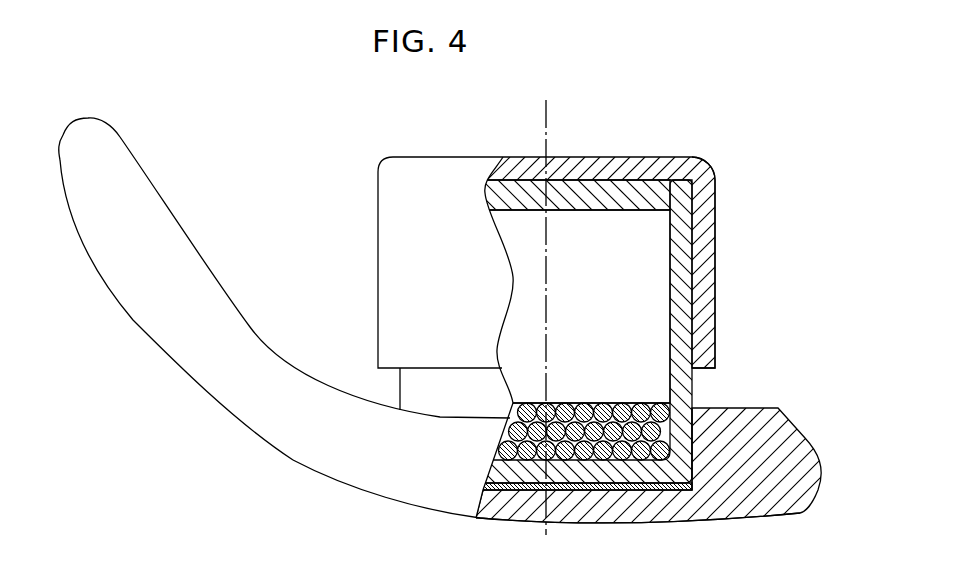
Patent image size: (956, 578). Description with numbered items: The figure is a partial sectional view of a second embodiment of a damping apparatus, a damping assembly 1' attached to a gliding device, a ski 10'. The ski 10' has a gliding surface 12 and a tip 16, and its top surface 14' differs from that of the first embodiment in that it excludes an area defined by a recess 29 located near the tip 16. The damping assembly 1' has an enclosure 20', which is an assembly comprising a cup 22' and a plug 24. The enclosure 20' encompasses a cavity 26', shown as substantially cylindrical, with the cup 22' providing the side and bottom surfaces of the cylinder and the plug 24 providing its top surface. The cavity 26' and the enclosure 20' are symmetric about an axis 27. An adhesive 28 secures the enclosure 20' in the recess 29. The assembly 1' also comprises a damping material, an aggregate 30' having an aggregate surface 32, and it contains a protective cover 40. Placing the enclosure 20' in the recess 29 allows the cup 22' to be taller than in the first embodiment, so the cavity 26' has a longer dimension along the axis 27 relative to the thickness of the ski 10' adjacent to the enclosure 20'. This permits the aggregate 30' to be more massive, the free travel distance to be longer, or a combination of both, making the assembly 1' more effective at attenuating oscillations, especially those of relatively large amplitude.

The damping assembly 1' is at (368, 288).
The ski 10' is at (285, 298).
The gliding surface 12 is at (292, 460).
The tip 16 is at (127, 195).
The axis 27 is at (545, 120).
The protective cover 40 is at (680, 165).
The plug 24 is at (593, 197).
The cavity 26' is at (566, 322).
The cup 22' is at (652, 301).
The aggregate surface 32 is at (592, 402).
The aggregate 30' is at (620, 387).
The adhesive 28 is at (686, 485).
The top surface 14' is at (649, 431).
The recess 29 is at (693, 443).
The enclosure 20' is at (758, 262).